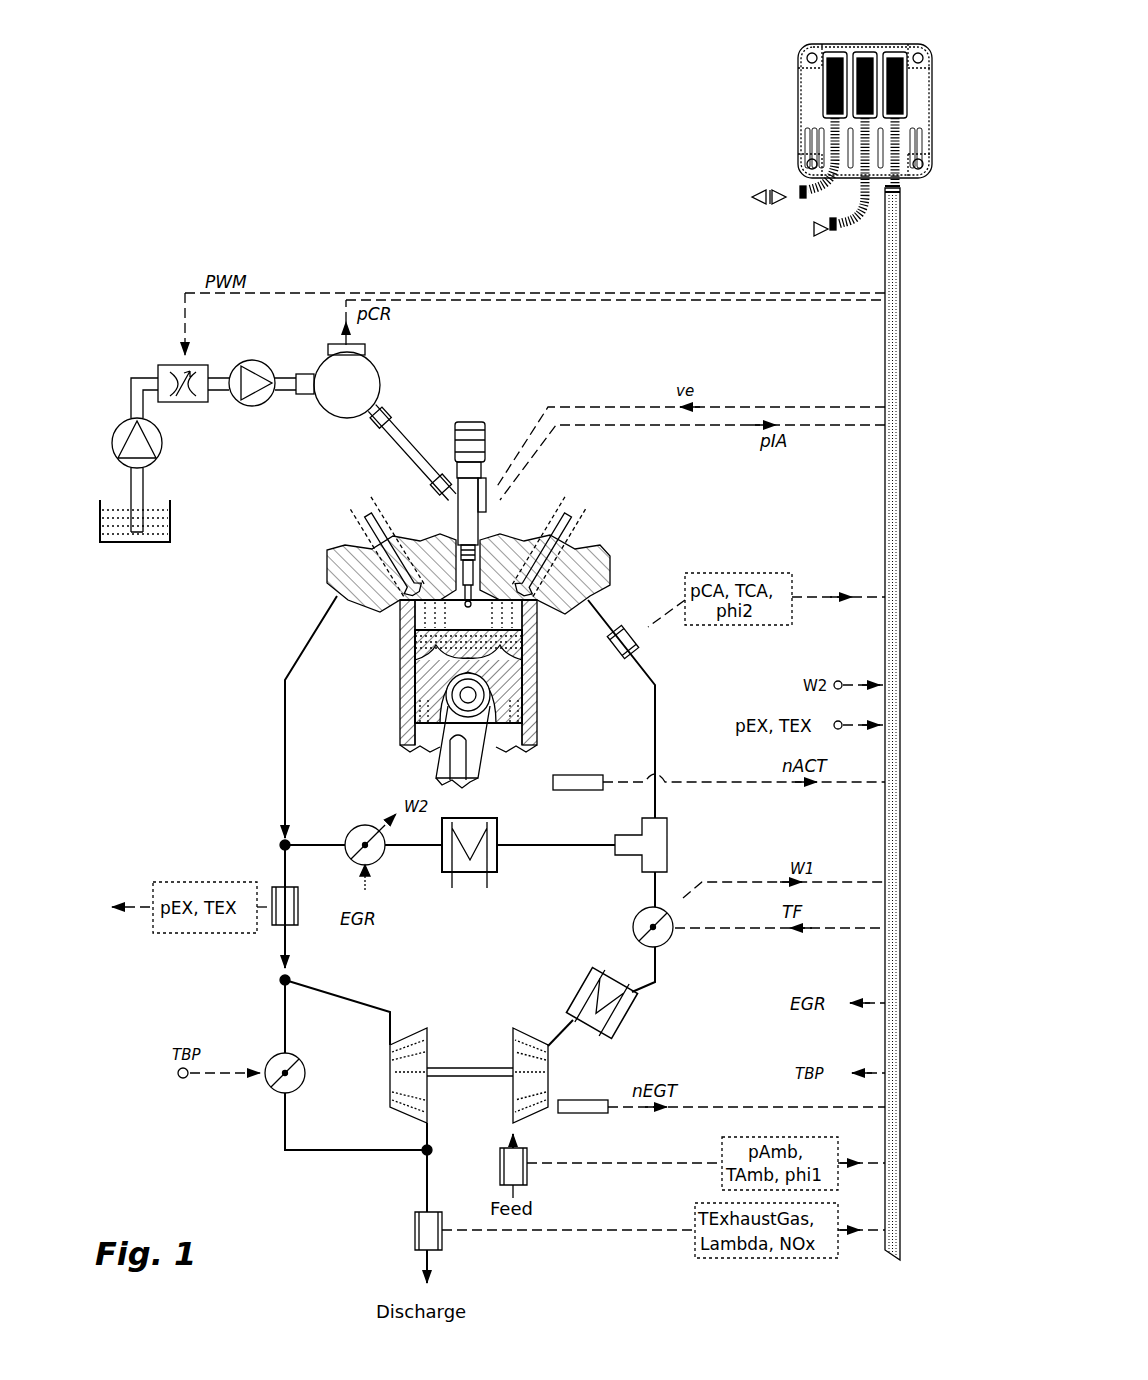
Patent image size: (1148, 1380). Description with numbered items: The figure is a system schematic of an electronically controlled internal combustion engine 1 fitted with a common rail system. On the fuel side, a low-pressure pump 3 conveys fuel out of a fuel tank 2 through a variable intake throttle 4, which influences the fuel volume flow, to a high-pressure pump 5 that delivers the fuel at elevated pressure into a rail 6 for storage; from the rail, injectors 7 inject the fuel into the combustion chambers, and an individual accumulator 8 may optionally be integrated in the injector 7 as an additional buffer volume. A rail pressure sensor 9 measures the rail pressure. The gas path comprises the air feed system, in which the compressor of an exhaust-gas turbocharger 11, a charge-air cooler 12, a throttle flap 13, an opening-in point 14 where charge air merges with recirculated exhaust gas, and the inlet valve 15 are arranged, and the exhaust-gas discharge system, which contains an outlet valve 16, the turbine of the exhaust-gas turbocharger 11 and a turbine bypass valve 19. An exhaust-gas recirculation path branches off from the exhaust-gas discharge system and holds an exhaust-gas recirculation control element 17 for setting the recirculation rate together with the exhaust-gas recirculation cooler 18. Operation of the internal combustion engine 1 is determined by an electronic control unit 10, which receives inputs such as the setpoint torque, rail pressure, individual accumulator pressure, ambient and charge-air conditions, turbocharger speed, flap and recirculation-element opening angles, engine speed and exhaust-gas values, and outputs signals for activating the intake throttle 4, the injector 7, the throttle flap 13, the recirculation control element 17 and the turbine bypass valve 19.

The internal combustion engine 1 is at (247, 152).
The fuel tank 2 is at (112, 508).
The low-pressure pump 3 is at (118, 430).
The variable intake throttle 4 is at (162, 366).
The high-pressure pump 5 is at (262, 405).
The rail 6 is at (372, 372).
The injector 7 is at (474, 398).
The individual accumulator 8 is at (478, 448).
The rail pressure sensor 9 is at (328, 348).
The electronic control unit 10 is at (860, 48).
The exhaust-gas turbocharger 11 is at (468, 1028).
The charge-air cooler 12 is at (634, 1018).
The throttle flap 13 is at (640, 920).
The opening-in point 14 is at (662, 832).
The inlet valve 15 is at (572, 516).
The outlet valve 16 is at (368, 516).
The EGR control element 17 is at (355, 832).
The EGR cooler 18 is at (490, 876).
The turbine bypass valve 19 is at (272, 1058).